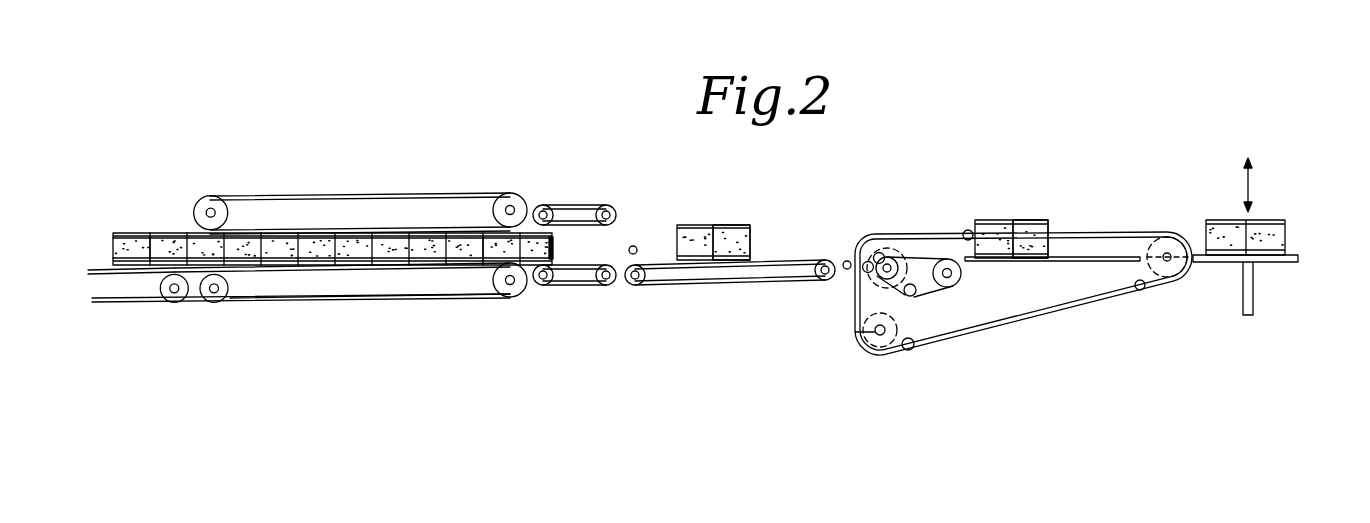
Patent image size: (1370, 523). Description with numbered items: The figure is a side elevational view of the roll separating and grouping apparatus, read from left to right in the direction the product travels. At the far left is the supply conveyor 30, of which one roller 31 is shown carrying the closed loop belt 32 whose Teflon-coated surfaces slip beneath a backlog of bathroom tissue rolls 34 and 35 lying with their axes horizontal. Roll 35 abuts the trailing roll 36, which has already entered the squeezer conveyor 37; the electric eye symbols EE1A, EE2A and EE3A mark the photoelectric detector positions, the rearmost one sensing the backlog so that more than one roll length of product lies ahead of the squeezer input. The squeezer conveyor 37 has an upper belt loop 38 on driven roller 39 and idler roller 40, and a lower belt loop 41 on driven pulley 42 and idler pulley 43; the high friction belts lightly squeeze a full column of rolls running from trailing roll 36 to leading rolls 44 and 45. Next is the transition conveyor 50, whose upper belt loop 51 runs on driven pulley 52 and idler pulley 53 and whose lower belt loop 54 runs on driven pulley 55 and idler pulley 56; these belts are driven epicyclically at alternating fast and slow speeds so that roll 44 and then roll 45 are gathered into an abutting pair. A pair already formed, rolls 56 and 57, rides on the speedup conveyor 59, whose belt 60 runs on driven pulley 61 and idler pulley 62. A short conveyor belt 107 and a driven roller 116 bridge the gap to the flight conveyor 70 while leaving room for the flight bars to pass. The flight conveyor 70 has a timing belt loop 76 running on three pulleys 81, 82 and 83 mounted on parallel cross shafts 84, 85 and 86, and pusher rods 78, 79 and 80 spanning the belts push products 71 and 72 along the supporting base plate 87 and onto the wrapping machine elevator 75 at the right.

The supply conveyor 30 is at (153, 337).
The roller 31 is at (177, 290).
The supply conveyor belt 32 is at (138, 303).
The bathroom tissue roll 34 is at (125, 238).
The bathroom tissue roll 35 is at (162, 233).
The trailing roll 36 is at (197, 233).
The squeezer conveyor 37 is at (337, 307).
The upper belt loop 38 is at (337, 193).
The driven roller 39 is at (510, 203).
The idler roller 40 is at (211, 211).
The lower belt loop 41 is at (420, 300).
The driven pulley 42 is at (512, 283).
The idler pulley 43 is at (215, 290).
The leading roll 44 is at (555, 247).
The leading roll 45 is at (493, 238).
The transition conveyor 50 is at (557, 338).
The upper belt loop 51 is at (577, 207).
The driven pulley 52 is at (607, 213).
The idler pulley 53 is at (543, 210).
The lower belt loop 54 is at (573, 283).
The driven pulley 55 is at (607, 283).
The idler pulley / paper roll 56 is at (542, 282).
The paper roll 57 is at (752, 232).
The speedup conveyor 59 is at (733, 320).
The belt 60 is at (743, 280).
The driven pulley 61 is at (820, 280).
The idler pulley 62 is at (636, 283).
The flight conveyor 70 is at (1033, 320).
The product roll 71 is at (997, 222).
The product roll 72 is at (1047, 225).
The wrapping machine elevator 75 is at (1284, 273).
The timing belt loop 76 is at (1083, 302).
The pusher rod 78 is at (968, 230).
The pusher rod 79 is at (1142, 290).
The pusher rod 80 is at (909, 348).
The pulley 81 is at (1178, 238).
The pulley 82 is at (897, 250).
The pulley 83 is at (877, 348).
The cross shaft 84 is at (1170, 263).
The cross shaft 85 is at (879, 253).
The cross shaft 86 is at (855, 332).
The base plate 87 is at (1087, 262).
The conveyor belt 107 is at (955, 292).
The driven roller 116 is at (848, 260).
The section line EE1A is at (486, 270).
The section line EE2A is at (636, 246).
The section line EE3A is at (113, 288).